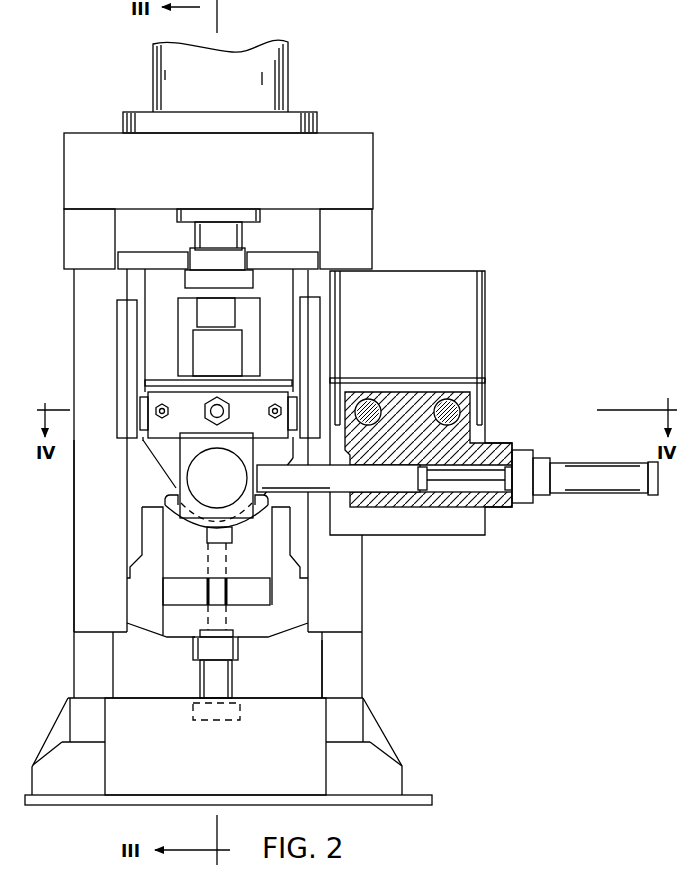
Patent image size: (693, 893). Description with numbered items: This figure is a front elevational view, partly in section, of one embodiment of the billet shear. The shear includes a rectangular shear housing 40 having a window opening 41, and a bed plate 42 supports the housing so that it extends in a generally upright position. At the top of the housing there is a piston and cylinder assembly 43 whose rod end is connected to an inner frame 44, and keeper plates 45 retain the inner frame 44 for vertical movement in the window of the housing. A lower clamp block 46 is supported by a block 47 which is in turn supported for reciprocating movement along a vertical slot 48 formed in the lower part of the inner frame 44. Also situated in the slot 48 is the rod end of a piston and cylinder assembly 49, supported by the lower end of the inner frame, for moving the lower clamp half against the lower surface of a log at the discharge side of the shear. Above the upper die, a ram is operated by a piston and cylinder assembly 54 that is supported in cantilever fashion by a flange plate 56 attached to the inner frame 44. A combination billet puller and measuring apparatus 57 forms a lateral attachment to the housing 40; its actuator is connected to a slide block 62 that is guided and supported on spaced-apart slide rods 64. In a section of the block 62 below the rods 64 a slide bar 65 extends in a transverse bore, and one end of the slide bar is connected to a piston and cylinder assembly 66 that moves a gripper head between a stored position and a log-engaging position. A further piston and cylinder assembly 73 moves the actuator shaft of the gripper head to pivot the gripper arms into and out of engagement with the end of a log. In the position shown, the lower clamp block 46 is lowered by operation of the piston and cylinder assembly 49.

The shear housing 40 is at (363, 648).
The window opening 41 is at (322, 670).
The bed plate 42 is at (403, 786).
The piston and cylinder assembly 43 is at (292, 81).
The inner frame 44 is at (268, 638).
The keeper plates 45 is at (87, 600).
The lower clamp block 46 is at (165, 497).
The block 47 is at (257, 547).
The vertical slot 48 is at (268, 599).
The piston and cylinder assembly 49 is at (201, 673).
The piston and cylinder assembly 54 is at (232, 363).
The flange plate 56 is at (277, 282).
The combination billet puller and measuring apparatus 57 is at (505, 511).
The slide block 62 is at (464, 433).
The slide rods 64 is at (447, 398).
The slide bar 65 is at (395, 483).
The piston and cylinder assembly 66 is at (578, 494).
The piston and cylinder assembly 73 is at (231, 489).